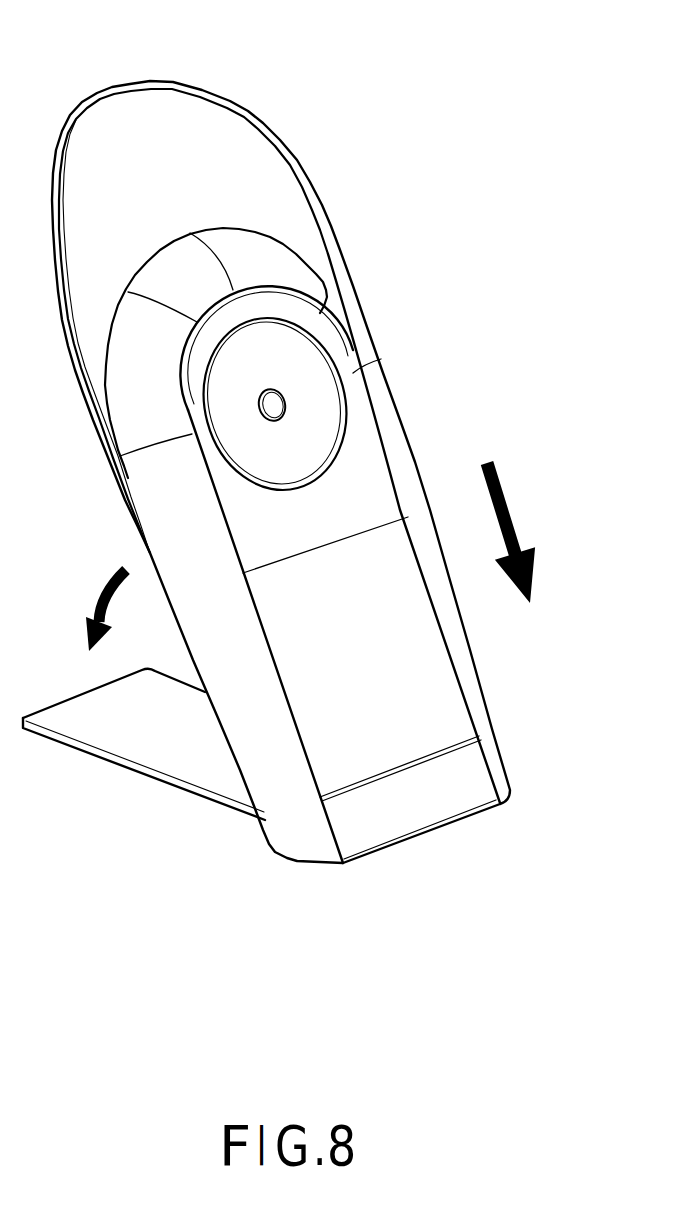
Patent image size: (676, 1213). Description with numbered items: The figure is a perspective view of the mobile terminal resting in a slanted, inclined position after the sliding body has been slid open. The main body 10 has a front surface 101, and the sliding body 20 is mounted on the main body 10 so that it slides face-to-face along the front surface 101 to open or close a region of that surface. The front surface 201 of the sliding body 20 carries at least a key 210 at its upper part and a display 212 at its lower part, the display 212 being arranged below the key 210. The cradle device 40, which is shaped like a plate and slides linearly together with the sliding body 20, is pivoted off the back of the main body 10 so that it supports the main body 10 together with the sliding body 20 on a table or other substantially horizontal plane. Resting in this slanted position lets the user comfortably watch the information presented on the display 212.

The main body 10 is at (127, 88).
The front surface 101 is at (243, 152).
The sliding body 20 is at (334, 572).
The front surface 201 is at (378, 403).
The key 210 is at (297, 356).
The display 212 is at (383, 748).
The cradle device 40 is at (168, 762).